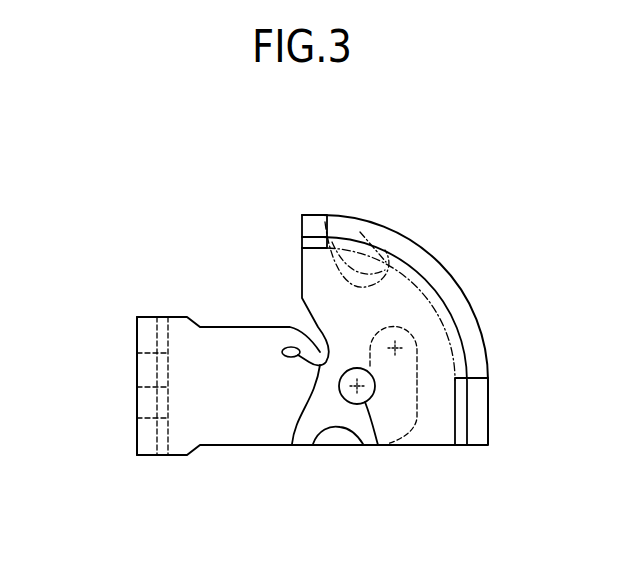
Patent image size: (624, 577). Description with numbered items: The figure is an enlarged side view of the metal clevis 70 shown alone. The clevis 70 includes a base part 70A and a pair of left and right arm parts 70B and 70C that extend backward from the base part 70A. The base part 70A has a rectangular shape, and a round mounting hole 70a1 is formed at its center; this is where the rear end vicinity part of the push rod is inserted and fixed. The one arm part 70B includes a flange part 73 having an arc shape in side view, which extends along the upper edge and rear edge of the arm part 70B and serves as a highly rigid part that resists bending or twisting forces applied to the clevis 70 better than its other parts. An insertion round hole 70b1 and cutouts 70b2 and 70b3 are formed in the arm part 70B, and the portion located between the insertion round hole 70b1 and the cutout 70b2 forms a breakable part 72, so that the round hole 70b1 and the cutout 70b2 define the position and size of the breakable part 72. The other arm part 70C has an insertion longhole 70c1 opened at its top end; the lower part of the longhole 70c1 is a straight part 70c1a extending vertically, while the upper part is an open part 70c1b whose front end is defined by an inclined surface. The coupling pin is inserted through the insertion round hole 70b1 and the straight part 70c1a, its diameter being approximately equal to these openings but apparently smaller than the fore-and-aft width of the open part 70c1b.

The clevis 70 is at (487, 318).
The base part 70A is at (137, 433).
The arm part 70B is at (415, 313).
The arm part 70C is at (405, 403).
The mounting hole 70a1 is at (137, 363).
The insertion round hole 70b1 is at (378, 445).
The cutout 70b2 is at (287, 350).
The cutout 70b3 is at (340, 447).
The insertion longhole 70c1 is at (370, 358).
The straight part 70c1a is at (352, 380).
The open part 70c1b is at (302, 318).
The breakable part 72 is at (291, 445).
The flange part 73 is at (315, 223).